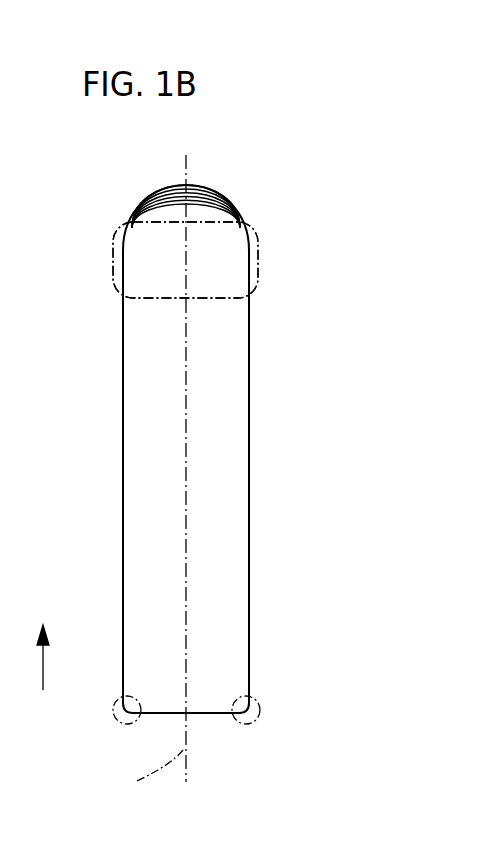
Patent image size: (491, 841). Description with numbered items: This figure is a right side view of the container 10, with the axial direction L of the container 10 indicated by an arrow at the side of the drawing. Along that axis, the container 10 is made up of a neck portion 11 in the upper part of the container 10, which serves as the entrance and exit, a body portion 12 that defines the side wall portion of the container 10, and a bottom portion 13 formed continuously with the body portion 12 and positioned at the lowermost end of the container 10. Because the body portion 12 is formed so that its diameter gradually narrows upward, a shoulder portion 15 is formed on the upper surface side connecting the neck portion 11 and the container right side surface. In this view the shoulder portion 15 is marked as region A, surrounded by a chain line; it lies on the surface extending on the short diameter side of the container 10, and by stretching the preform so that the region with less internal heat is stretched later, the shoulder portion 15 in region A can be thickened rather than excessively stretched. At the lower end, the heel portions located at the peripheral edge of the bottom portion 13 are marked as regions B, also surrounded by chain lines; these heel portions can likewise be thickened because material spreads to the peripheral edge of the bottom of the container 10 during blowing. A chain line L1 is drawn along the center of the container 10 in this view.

The container 10 is at (280, 154).
The neck portion 11 is at (163, 188).
The body portion 12 is at (249, 546).
The bottom portion 13 is at (207, 715).
The shoulder portion 15 is at (225, 262).
The region A is at (257, 280).
The regions B is at (258, 704).
The axial direction L is at (32, 662).
The center axis L1 is at (144, 771).